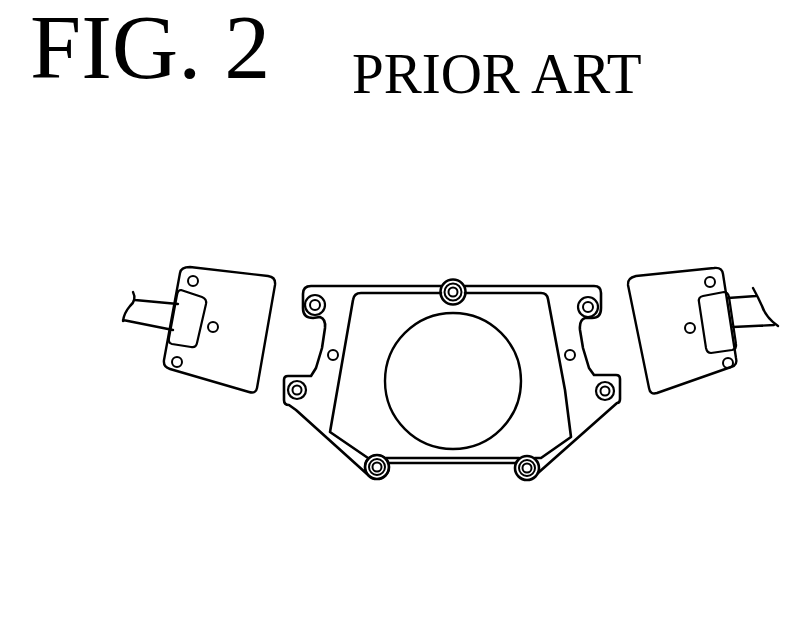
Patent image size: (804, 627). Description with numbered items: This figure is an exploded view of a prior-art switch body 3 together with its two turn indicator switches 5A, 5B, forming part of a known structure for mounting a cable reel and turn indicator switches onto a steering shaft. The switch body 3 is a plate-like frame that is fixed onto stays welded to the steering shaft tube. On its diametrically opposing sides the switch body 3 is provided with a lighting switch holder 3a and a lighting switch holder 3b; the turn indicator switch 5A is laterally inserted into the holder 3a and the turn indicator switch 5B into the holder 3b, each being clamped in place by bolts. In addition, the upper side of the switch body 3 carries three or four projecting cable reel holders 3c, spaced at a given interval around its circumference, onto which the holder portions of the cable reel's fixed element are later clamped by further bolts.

The switch body 3 is at (477, 282).
The lighting switch holder 3a is at (613, 403).
The lighting switch holder 3b is at (295, 410).
The cable reel holder 3c is at (363, 480).
The turn indicator switch 5A is at (650, 270).
The turn indicator switch 5B is at (240, 288).